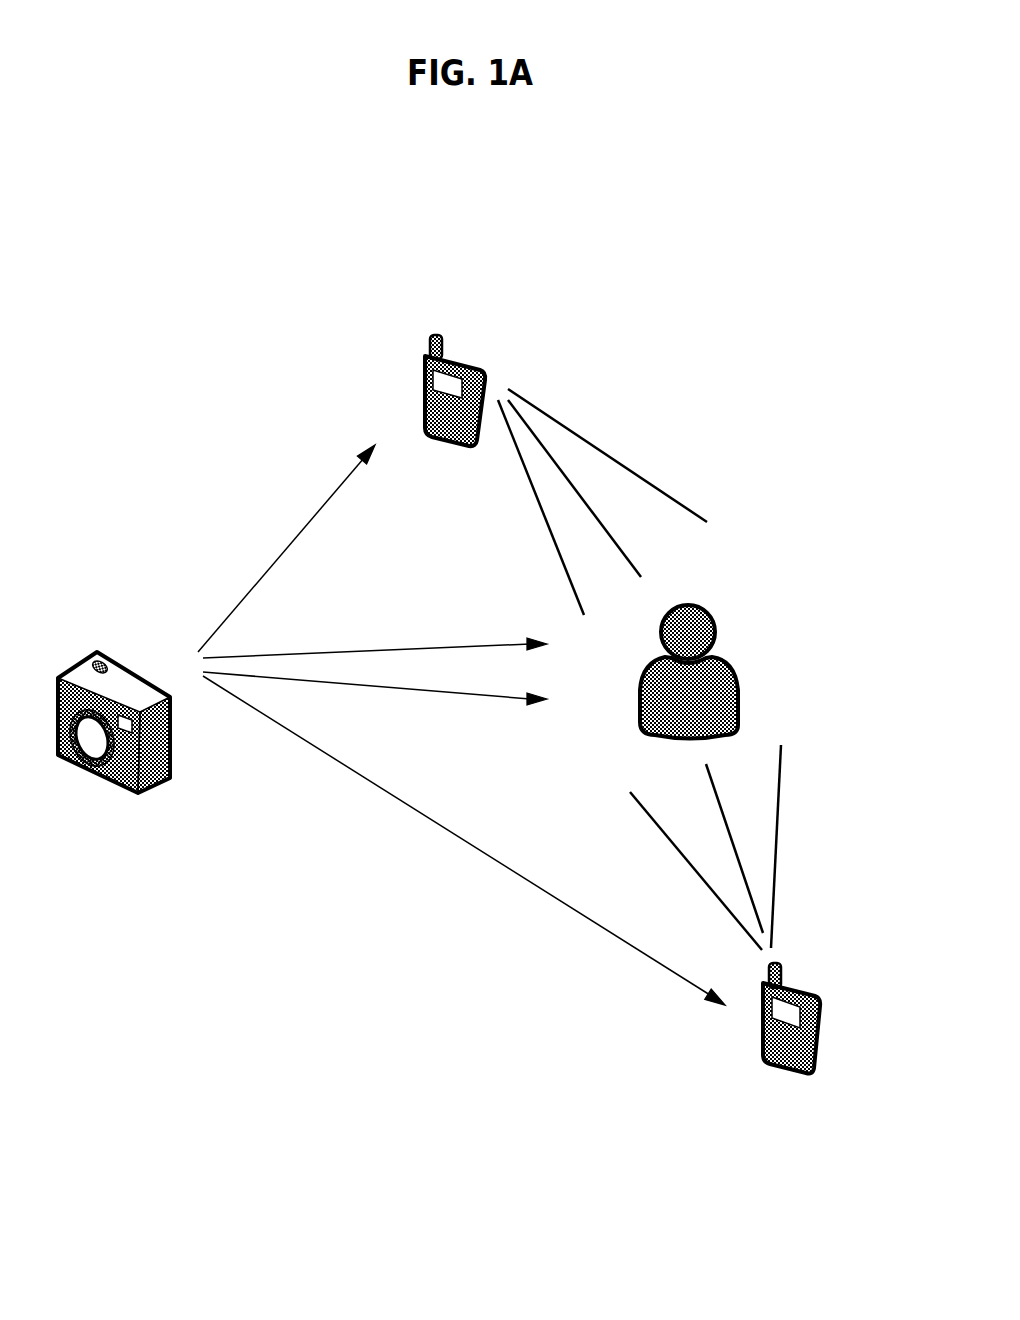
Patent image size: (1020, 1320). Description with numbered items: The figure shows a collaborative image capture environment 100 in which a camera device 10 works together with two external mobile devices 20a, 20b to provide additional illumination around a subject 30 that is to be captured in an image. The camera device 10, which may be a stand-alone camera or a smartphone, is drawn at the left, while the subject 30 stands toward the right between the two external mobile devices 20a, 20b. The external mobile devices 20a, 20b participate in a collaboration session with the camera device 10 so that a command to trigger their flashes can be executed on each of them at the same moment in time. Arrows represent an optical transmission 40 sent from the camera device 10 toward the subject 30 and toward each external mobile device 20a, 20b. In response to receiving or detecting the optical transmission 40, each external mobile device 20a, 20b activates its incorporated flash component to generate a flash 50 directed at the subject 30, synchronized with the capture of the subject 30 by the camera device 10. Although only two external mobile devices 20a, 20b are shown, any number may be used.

The environment 100 is at (552, 240).
The camera device 10 is at (102, 772).
The external mobile device 20a is at (433, 333).
The external mobile device 20b is at (795, 1073).
The subject 30 is at (735, 692).
The optical transmission 40 is at (268, 568).
The flash 50 is at (640, 477).